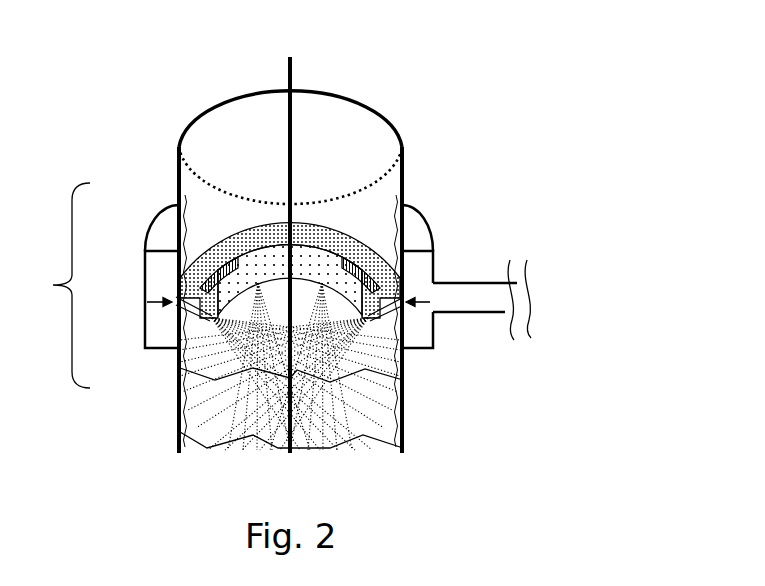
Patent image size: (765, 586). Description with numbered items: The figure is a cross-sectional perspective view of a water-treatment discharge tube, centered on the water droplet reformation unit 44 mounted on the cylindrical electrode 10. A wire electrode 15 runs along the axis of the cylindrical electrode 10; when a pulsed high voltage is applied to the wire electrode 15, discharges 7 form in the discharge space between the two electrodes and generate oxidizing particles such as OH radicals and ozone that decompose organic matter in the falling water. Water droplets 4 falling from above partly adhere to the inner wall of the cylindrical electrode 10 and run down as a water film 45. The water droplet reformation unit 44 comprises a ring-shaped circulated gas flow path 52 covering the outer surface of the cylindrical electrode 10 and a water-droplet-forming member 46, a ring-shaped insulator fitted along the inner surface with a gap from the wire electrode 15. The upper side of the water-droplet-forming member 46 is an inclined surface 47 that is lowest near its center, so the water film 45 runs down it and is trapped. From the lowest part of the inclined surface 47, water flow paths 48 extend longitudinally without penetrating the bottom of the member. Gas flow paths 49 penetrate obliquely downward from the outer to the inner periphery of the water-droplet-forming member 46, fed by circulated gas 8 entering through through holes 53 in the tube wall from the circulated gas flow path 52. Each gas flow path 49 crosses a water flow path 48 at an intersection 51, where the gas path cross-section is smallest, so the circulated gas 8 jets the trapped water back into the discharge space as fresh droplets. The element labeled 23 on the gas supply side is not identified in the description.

The water droplets 4 is at (404, 215).
The discharges 7 is at (365, 440).
The circulated gas 8 is at (436, 290).
The cylindrical electrode 10 is at (404, 173).
The wire electrode 15 is at (297, 68).
The feed pipe connection 23 is at (472, 315).
The water droplet reformation unit 44 is at (49, 293).
The water film 45 is at (179, 203).
The water-droplet-forming member 46 is at (275, 225).
The inclined surface 47 is at (230, 240).
The water flow paths 48 is at (178, 302).
The gas flow paths 49 is at (179, 340).
The intersection 51 is at (179, 360).
The circulated gas flow path 52 is at (164, 245).
The through holes 53 is at (179, 310).